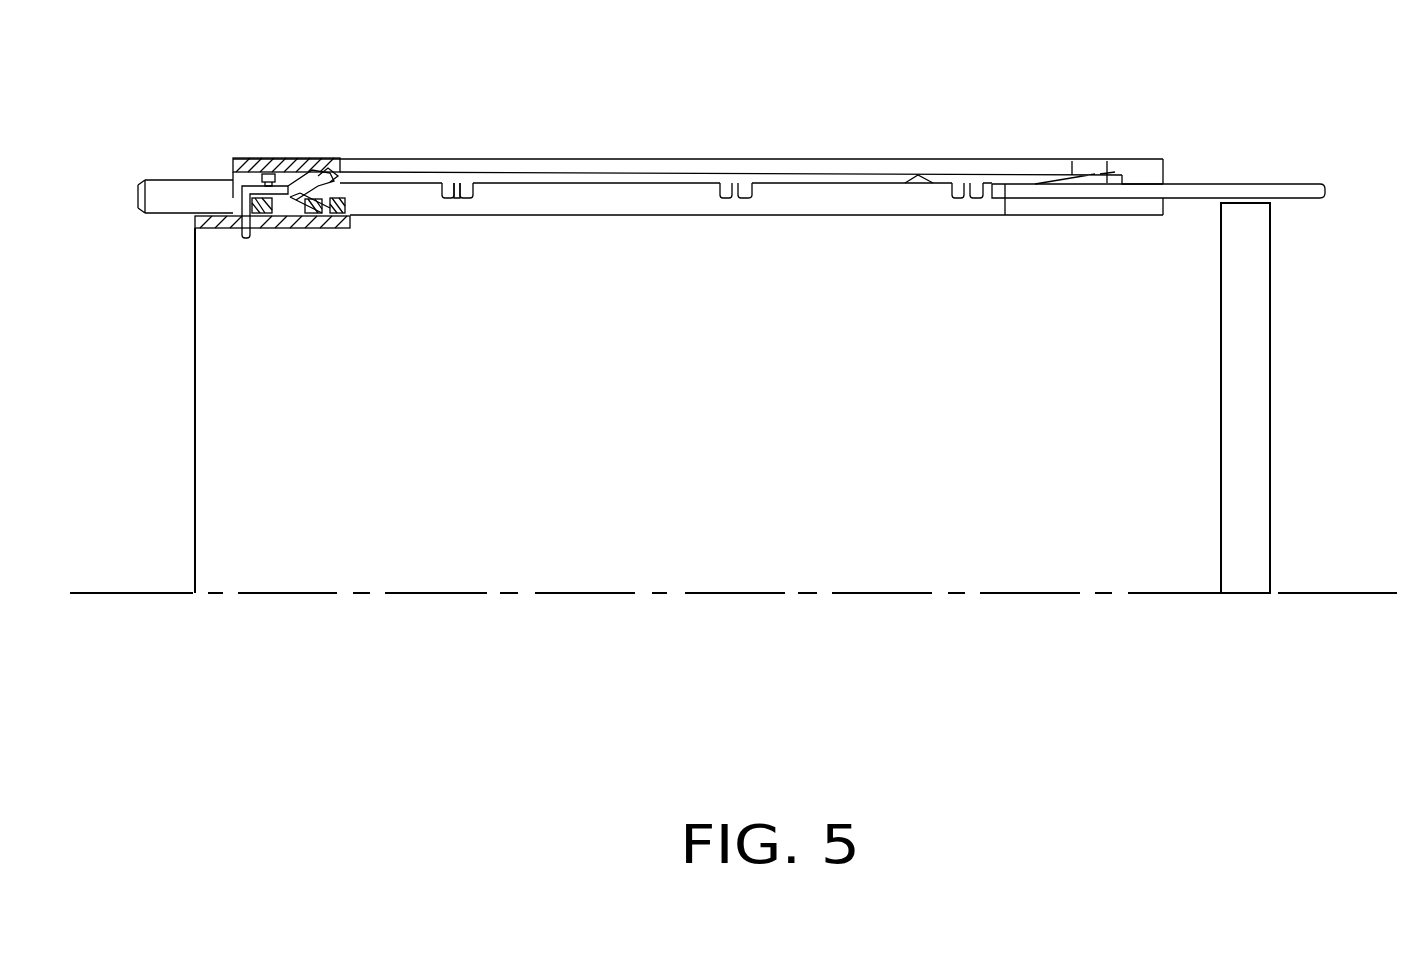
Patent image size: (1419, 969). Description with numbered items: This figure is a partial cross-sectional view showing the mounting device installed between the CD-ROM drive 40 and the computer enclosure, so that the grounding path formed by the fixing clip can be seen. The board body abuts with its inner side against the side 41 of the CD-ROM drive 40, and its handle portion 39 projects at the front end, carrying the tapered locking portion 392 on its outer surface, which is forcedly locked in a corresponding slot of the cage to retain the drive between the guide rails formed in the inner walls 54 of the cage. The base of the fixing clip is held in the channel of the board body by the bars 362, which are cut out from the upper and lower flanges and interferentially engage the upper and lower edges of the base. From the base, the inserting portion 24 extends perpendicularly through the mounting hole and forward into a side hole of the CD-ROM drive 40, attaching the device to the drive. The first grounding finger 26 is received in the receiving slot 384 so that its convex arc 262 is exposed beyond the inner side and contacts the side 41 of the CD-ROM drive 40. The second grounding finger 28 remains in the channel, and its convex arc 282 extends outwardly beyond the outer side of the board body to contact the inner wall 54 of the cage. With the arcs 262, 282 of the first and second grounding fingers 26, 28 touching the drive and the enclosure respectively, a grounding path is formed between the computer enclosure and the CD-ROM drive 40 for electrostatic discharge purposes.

The inserting portion 24 is at (243, 193).
The first grounding finger 26 is at (307, 212).
The second grounding finger 28 is at (295, 178).
The handle portion 39 is at (1313, 187).
The CD-ROM drive 40 is at (1247, 490).
The side of the CD-ROM drive 41 is at (217, 230).
The inner wall of the cage 54 is at (855, 168).
The convex arc of the first grounding finger 262 is at (348, 220).
The convex arc of the second grounding finger 282 is at (320, 173).
The bar 362 is at (268, 178).
The receiving slot 384 is at (287, 214).
The locking portion 392 is at (1107, 182).